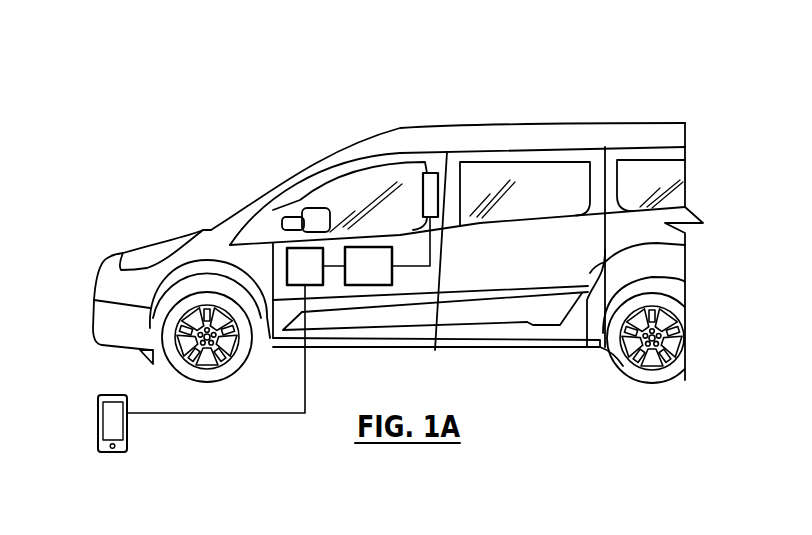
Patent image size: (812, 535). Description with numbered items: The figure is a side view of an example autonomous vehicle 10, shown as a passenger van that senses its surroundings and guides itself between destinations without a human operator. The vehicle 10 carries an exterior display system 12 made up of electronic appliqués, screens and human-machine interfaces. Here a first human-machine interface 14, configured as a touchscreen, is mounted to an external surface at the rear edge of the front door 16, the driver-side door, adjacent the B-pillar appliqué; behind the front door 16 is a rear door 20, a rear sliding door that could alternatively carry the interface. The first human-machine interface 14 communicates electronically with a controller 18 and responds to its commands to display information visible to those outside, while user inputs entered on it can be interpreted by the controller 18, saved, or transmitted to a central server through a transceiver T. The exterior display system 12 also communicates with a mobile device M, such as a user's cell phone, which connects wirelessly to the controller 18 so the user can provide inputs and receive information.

The autonomous vehicle 10 is at (439, 253).
The exterior display system 12 is at (404, 172).
The first human-machine interface 14 is at (438, 200).
The front door 16 is at (358, 315).
The controller 18 is at (381, 279).
The rear door 20 is at (470, 312).
The transceiver T is at (313, 277).
The mobile device M is at (127, 427).